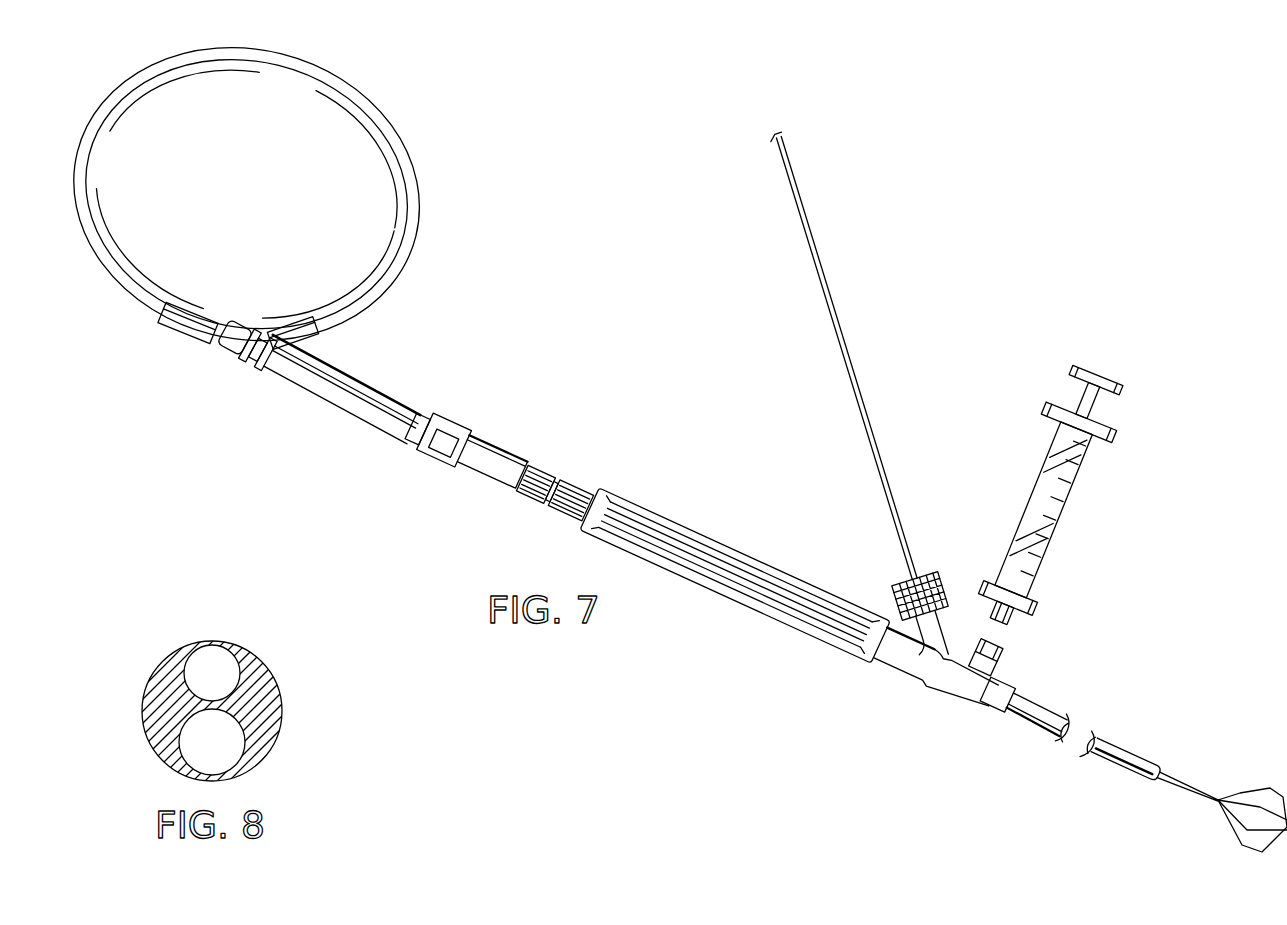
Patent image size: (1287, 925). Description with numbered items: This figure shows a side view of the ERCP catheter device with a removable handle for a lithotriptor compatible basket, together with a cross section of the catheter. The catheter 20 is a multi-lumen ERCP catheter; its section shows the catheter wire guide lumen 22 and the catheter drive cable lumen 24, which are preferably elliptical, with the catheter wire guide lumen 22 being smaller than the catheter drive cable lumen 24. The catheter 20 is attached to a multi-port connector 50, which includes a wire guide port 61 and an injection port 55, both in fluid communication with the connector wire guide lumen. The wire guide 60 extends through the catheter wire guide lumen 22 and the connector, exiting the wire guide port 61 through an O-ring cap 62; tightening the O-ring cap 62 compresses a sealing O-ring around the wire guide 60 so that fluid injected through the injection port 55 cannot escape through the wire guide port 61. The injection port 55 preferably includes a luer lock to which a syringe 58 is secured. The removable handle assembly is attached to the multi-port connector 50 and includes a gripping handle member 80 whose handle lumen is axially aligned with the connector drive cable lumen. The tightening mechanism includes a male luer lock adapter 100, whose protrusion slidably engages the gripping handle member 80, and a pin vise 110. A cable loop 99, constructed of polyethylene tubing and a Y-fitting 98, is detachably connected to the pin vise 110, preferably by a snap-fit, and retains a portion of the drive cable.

In FIG. 7, the catheter 20 is at (1151, 773).
In FIG. 8, the catheter 20 is at (273, 660).
In FIG. 8, the catheter wire guide lumen 22 is at (241, 650).
In FIG. 8, the catheter drive cable lumen 24 is at (251, 748).
In FIG. 7, the multi-port connector 50 is at (974, 688).
In FIG. 7, the injection port 55 is at (986, 657).
In FIG. 7, the syringe 58 is at (1051, 554).
In FIG. 7, the wire guide 60 is at (846, 322).
In FIG. 7, the wire guide port 61 is at (956, 642).
In FIG. 7, the O-ring cap 62 is at (938, 571).
In FIG. 7, the gripping handle member 80 is at (735, 575).
In FIG. 7, the Y-fitting 98 is at (278, 321).
In FIG. 7, the cable loop 99 is at (357, 85).
In FIG. 7, the male luer lock adapter 100 is at (554, 492).
In FIG. 7, the pin vise 110 is at (466, 450).